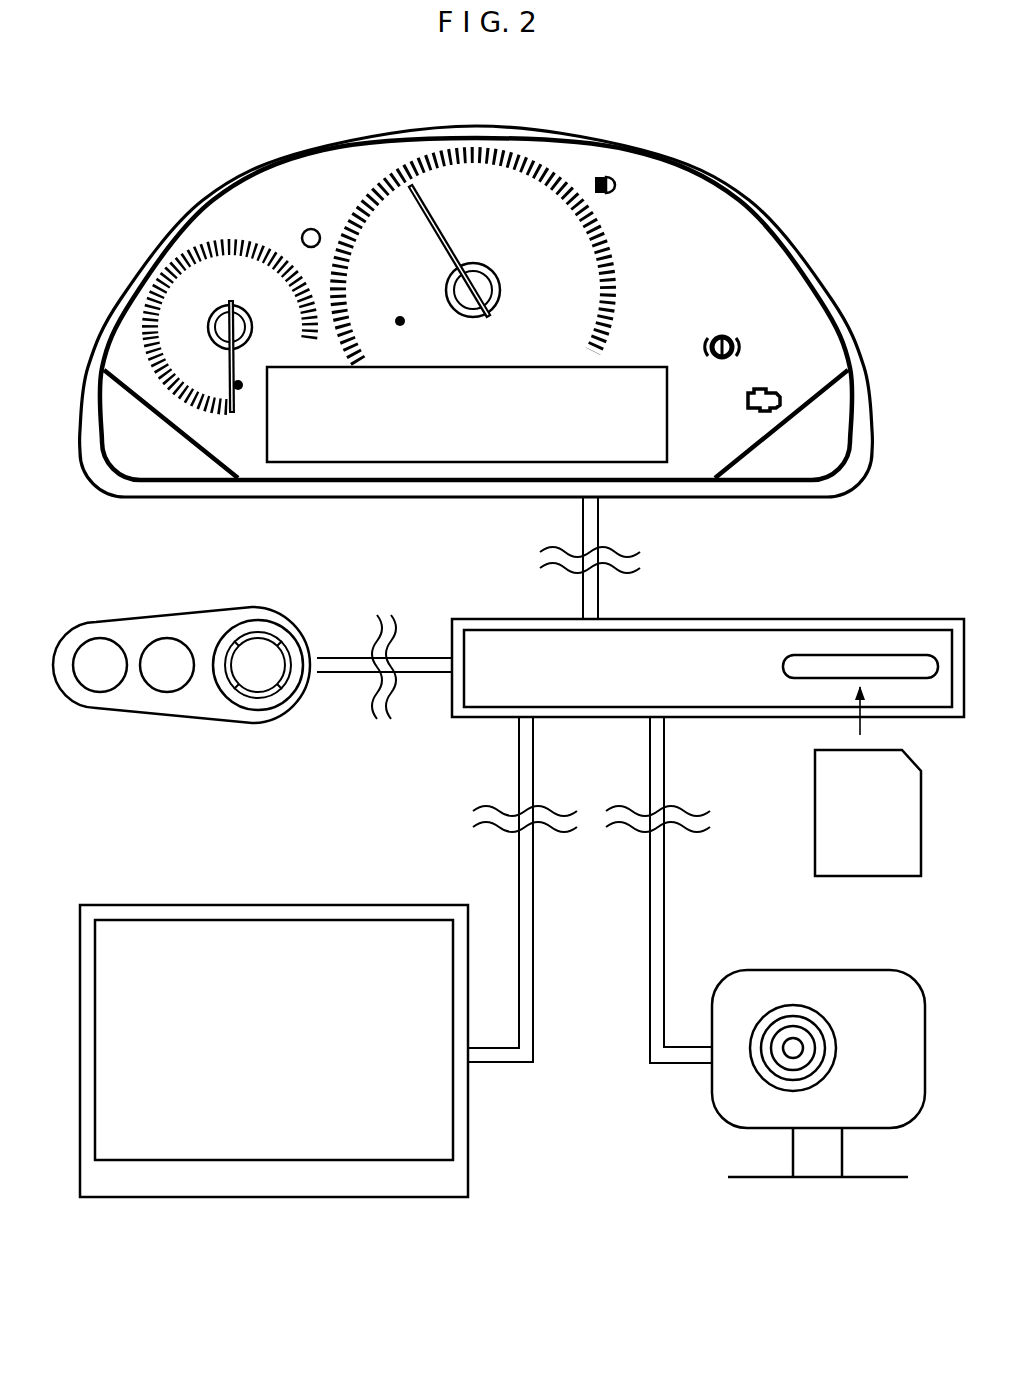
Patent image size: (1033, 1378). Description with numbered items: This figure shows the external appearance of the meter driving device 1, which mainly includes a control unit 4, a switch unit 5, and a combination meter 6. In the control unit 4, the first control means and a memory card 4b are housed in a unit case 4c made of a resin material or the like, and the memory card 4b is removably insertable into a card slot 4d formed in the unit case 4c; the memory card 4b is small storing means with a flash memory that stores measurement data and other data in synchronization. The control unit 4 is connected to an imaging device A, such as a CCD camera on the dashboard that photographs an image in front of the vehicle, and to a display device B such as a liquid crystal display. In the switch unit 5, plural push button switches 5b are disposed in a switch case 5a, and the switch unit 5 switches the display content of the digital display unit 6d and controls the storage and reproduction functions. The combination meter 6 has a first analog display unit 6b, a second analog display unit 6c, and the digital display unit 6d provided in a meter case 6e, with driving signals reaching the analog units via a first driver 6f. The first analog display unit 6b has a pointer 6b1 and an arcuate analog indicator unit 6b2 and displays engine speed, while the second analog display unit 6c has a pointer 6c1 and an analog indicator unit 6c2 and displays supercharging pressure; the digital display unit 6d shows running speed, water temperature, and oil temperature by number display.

The meter driving device 1 is at (910, 150).
The combination meter 6 is at (667, 157).
The meter case 6e is at (728, 193).
The first driver 6f is at (738, 247).
The second analog display unit 6c is at (236, 228).
The pointer 6c1 is at (212, 282).
The analog indicator unit 6c2 is at (222, 352).
The first analog display unit 6b is at (565, 170).
The pointer 6b1 is at (449, 260).
The analog indicator unit 6b2 is at (610, 253).
The digital display unit 6d is at (623, 380).
The switch unit 5 is at (207, 598).
The switch case 5a is at (108, 625).
The push button switches 5b is at (210, 692).
The control unit 4 is at (868, 598).
The unit case 4c is at (705, 621).
The card slot 4d is at (887, 652).
The memory card 4b is at (895, 807).
The display device B is at (335, 912).
The imaging device A is at (838, 980).